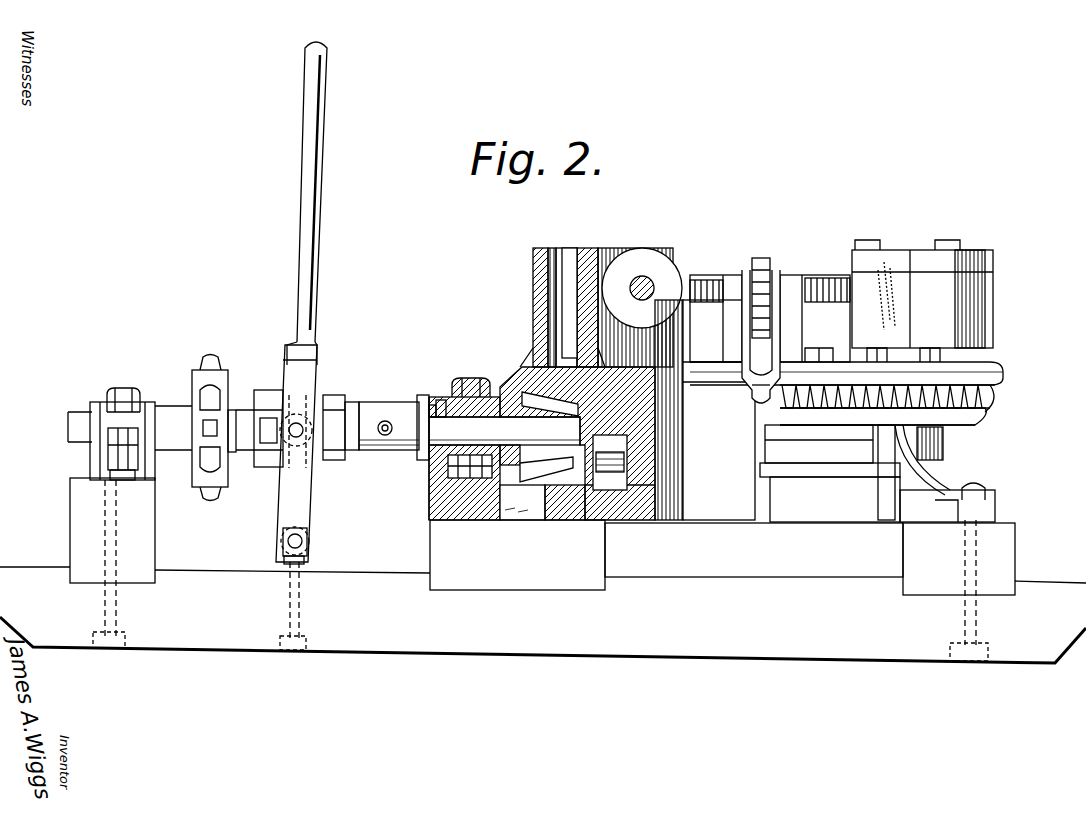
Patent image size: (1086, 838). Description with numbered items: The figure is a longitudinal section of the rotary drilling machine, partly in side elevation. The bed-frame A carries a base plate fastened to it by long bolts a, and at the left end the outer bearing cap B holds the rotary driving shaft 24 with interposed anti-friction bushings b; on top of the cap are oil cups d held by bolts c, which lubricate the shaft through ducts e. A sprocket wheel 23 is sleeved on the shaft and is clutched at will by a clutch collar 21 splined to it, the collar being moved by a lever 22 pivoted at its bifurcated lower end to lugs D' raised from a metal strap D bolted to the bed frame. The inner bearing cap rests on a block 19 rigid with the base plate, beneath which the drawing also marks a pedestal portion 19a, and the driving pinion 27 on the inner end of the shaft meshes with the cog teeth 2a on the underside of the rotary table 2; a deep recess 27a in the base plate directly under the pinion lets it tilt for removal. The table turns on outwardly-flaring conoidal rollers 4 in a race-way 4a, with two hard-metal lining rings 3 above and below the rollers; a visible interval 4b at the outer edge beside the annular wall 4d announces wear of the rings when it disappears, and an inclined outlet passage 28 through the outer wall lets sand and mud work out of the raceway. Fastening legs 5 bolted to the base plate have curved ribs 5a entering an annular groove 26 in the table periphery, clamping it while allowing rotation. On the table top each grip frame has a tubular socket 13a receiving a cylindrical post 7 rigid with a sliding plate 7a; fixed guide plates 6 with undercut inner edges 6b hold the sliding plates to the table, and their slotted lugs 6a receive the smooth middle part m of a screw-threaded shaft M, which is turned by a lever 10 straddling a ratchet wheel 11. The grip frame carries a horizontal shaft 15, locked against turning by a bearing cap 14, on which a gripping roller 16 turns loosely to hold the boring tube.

The bed-frame A is at (543, 593).
The outer bearing cap B is at (92, 398).
The metal strap D is at (272, 588).
The lugs D' is at (317, 552).
The screw-threaded shaft M is at (820, 278).
The long bolts a is at (110, 632).
The anti-friction bushings b is at (430, 404).
The bolts c is at (710, 395).
The oil cups d is at (440, 398).
The ducts e is at (470, 378).
The smooth middle part m is at (722, 280).
The rotary table 2 is at (1003, 382).
The cog teeth 2a is at (985, 410).
The lining rings 3 is at (512, 385).
The conoidal rollers 4 is at (700, 408).
The race-way 4a is at (635, 520).
The interval 4b is at (655, 462).
The annular wall 4d is at (560, 470).
The fastening legs 5 is at (948, 483).
The curved rib 5a is at (860, 432).
The guide plate 6 is at (985, 378).
The slotted lugs 6a is at (735, 316).
The inner edge 6b is at (1010, 348).
The cylindrical post 7 is at (570, 248).
The sliding plate 7a is at (528, 362).
The lever 10 is at (745, 395).
The ratchet wheel 11 is at (761, 258).
The tubular socket 13a is at (533, 264).
The bearing cap 14 is at (920, 262).
The shaft 15 is at (640, 283).
The gripping rollers 16 is at (654, 290).
The block 19 is at (428, 500).
The pedestal 19a is at (113, 559).
The clutch collar 21 is at (335, 370).
The lever 22 is at (318, 330).
The sprocket wheel 23 is at (207, 350).
The rotary driving shaft 24 is at (299, 427).
The annular groove 26 is at (945, 428).
The driving pinion 27 is at (535, 520).
The deep recess 27a is at (552, 520).
The outlet passage 28 is at (800, 482).